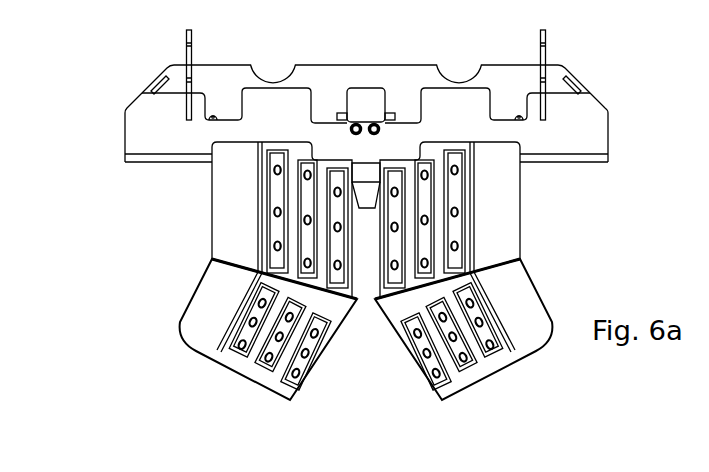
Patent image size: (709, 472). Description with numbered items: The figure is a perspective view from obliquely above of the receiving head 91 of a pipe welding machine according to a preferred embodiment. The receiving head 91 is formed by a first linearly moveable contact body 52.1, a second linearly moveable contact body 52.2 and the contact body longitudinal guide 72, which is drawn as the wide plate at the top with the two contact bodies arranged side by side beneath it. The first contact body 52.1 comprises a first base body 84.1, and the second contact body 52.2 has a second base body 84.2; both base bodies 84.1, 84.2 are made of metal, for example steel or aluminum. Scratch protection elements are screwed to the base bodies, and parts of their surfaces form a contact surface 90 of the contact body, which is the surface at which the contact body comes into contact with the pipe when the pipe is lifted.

The receiving head 91 is at (628, 64).
The contact body longitudinal guide 72 is at (583, 122).
The first linearly moveable contact body 52.1 is at (226, 190).
The second linearly moveable contact body 52.2 is at (503, 190).
The first base body 84.1 is at (238, 220).
The second base body 84.2 is at (490, 218).
The contact surface 90 is at (378, 268).